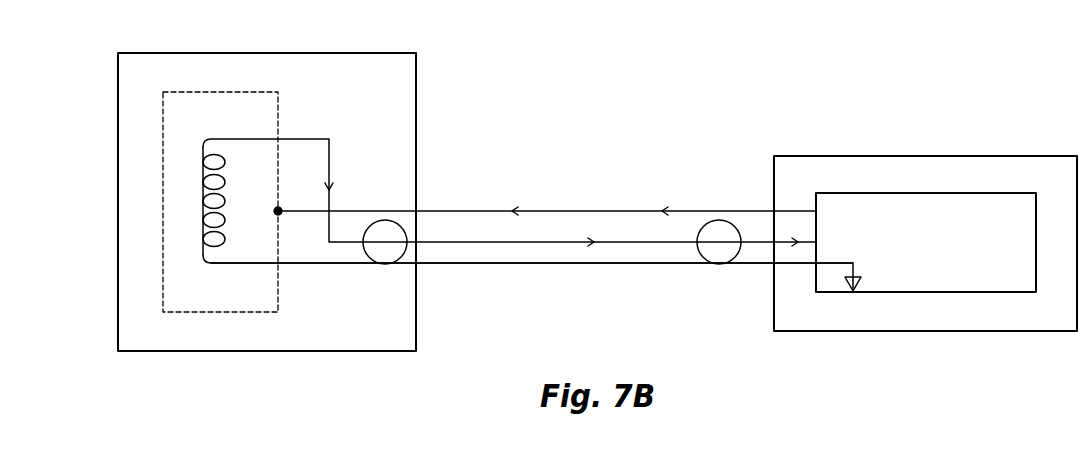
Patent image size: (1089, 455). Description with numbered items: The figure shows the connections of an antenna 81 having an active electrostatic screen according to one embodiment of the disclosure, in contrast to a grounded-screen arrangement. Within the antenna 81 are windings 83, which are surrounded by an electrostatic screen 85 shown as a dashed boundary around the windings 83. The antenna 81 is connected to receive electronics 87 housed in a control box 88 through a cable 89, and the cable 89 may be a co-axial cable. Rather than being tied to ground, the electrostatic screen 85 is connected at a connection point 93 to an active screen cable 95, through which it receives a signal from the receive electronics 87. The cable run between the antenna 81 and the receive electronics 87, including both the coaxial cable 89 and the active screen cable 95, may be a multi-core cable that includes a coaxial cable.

The antenna 81 is at (356, 53).
The electrostatic screen 85 is at (163, 138).
The windings 83 is at (197, 212).
The connection point 93 is at (276, 214).
The active screen cable 95 is at (490, 207).
The cable 89 is at (557, 269).
The control box 88 is at (981, 156).
The receive electronics 87 is at (940, 254).